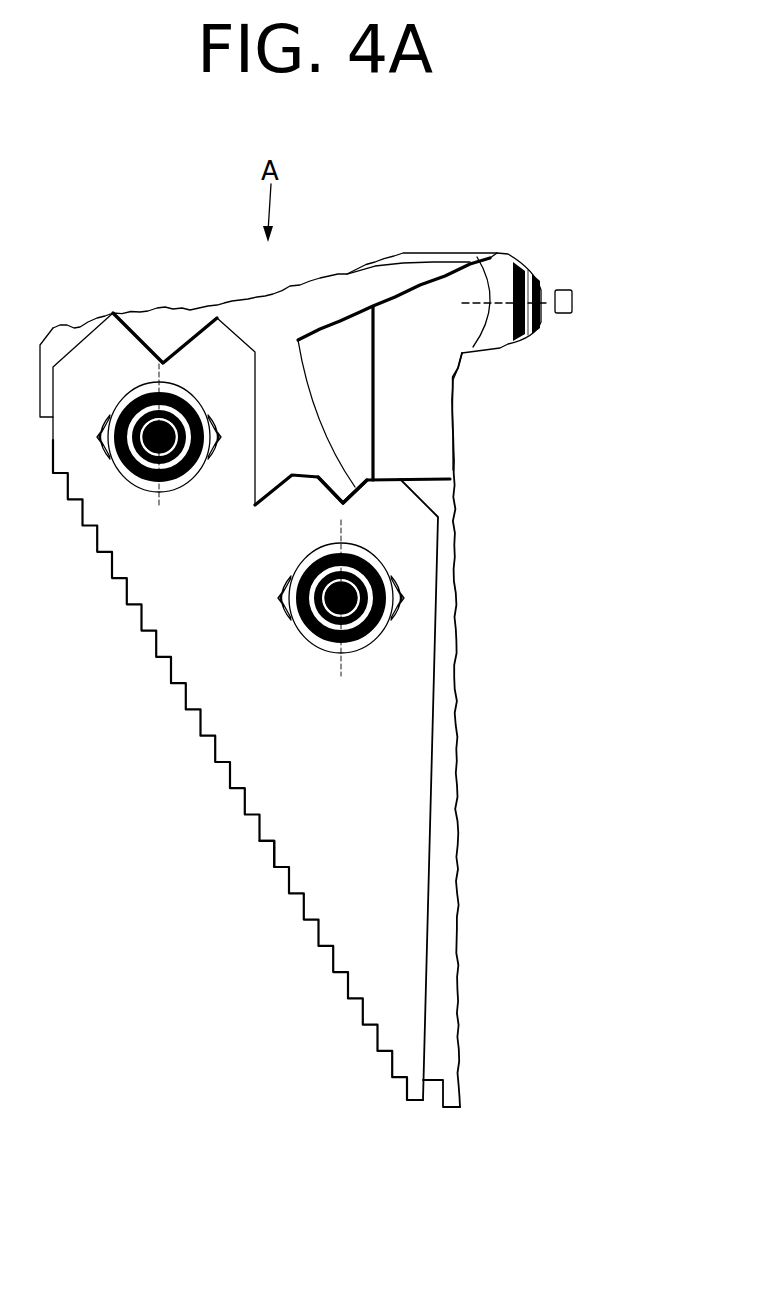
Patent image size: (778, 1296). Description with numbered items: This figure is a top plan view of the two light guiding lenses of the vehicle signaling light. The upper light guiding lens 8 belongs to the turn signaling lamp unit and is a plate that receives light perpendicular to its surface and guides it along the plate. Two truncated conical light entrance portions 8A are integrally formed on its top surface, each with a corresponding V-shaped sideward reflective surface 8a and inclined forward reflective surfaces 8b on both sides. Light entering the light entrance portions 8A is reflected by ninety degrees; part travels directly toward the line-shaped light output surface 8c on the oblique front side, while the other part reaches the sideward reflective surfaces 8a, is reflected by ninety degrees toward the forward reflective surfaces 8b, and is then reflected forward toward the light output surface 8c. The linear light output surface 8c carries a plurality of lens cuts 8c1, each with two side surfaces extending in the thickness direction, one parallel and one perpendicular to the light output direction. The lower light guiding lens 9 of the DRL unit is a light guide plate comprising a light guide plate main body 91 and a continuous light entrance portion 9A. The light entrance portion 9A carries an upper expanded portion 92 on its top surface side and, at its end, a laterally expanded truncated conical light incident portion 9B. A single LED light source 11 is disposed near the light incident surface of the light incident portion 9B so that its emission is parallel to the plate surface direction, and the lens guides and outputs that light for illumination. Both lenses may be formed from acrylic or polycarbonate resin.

The light guiding lens 8 is at (270, 680).
The V-shaped sideward reflective surface 8a is at (143, 338).
The forward reflective surface 8b is at (273, 378).
The light output surface 8c is at (183, 705).
The lens cut 8c1 is at (266, 845).
The light entrance portion 8A is at (250, 542).
The light guiding lens 9 is at (477, 730).
The light entrance portion 9A is at (477, 435).
The light incident portion 9B is at (505, 275).
The light guide plate main body 91 is at (380, 364).
The upper expanded portion 92 is at (476, 378).
The LED light source 11 is at (577, 276).